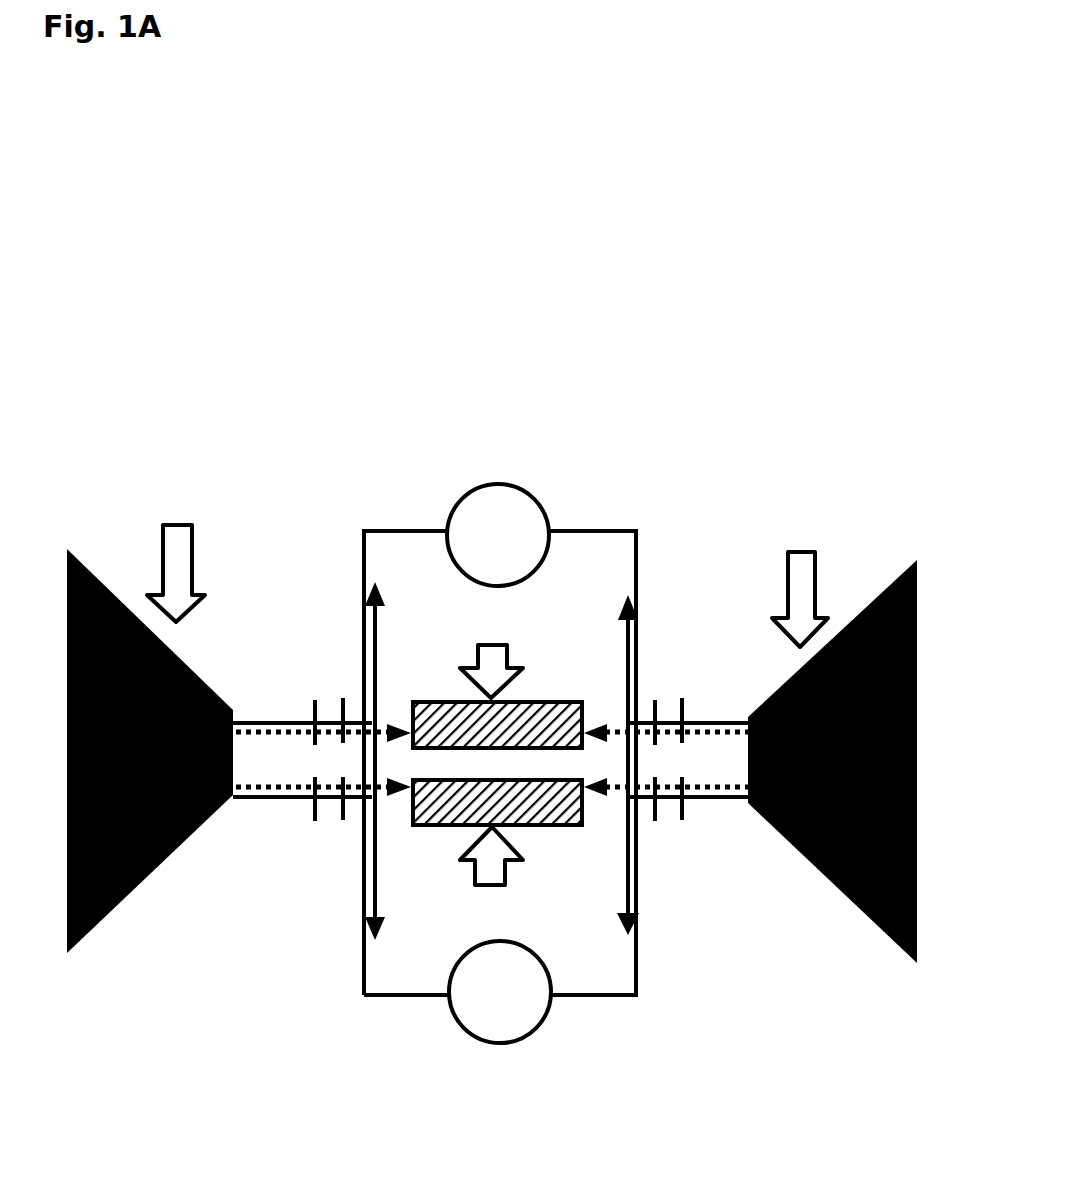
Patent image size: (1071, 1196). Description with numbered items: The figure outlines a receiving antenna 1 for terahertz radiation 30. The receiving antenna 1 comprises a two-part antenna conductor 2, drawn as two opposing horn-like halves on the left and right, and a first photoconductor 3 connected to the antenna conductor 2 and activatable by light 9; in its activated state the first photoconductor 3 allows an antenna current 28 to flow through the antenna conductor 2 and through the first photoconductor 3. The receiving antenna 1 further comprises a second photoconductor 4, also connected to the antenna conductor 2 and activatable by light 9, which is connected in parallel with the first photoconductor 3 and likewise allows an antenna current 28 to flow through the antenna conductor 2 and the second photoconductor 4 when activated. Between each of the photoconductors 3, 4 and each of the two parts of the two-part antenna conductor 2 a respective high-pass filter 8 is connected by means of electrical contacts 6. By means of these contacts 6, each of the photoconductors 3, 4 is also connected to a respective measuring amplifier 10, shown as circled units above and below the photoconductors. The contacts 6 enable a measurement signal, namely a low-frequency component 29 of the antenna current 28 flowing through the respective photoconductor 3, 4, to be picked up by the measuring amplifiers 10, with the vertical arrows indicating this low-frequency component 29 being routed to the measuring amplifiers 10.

The receiving antenna 1 is at (151, 419).
The antenna conductor 2 is at (125, 897).
The first photoconductor 3 is at (545, 701).
The second photoconductor 4 is at (543, 826).
The electrical contacts 6 is at (343, 823).
The high-pass filter 8 is at (313, 701).
The light 9 is at (508, 645).
The measuring amplifier 10 is at (518, 558).
The antenna current 28 is at (280, 790).
The low-frequency component 29 is at (640, 882).
The terahertz radiation 30 is at (193, 535).